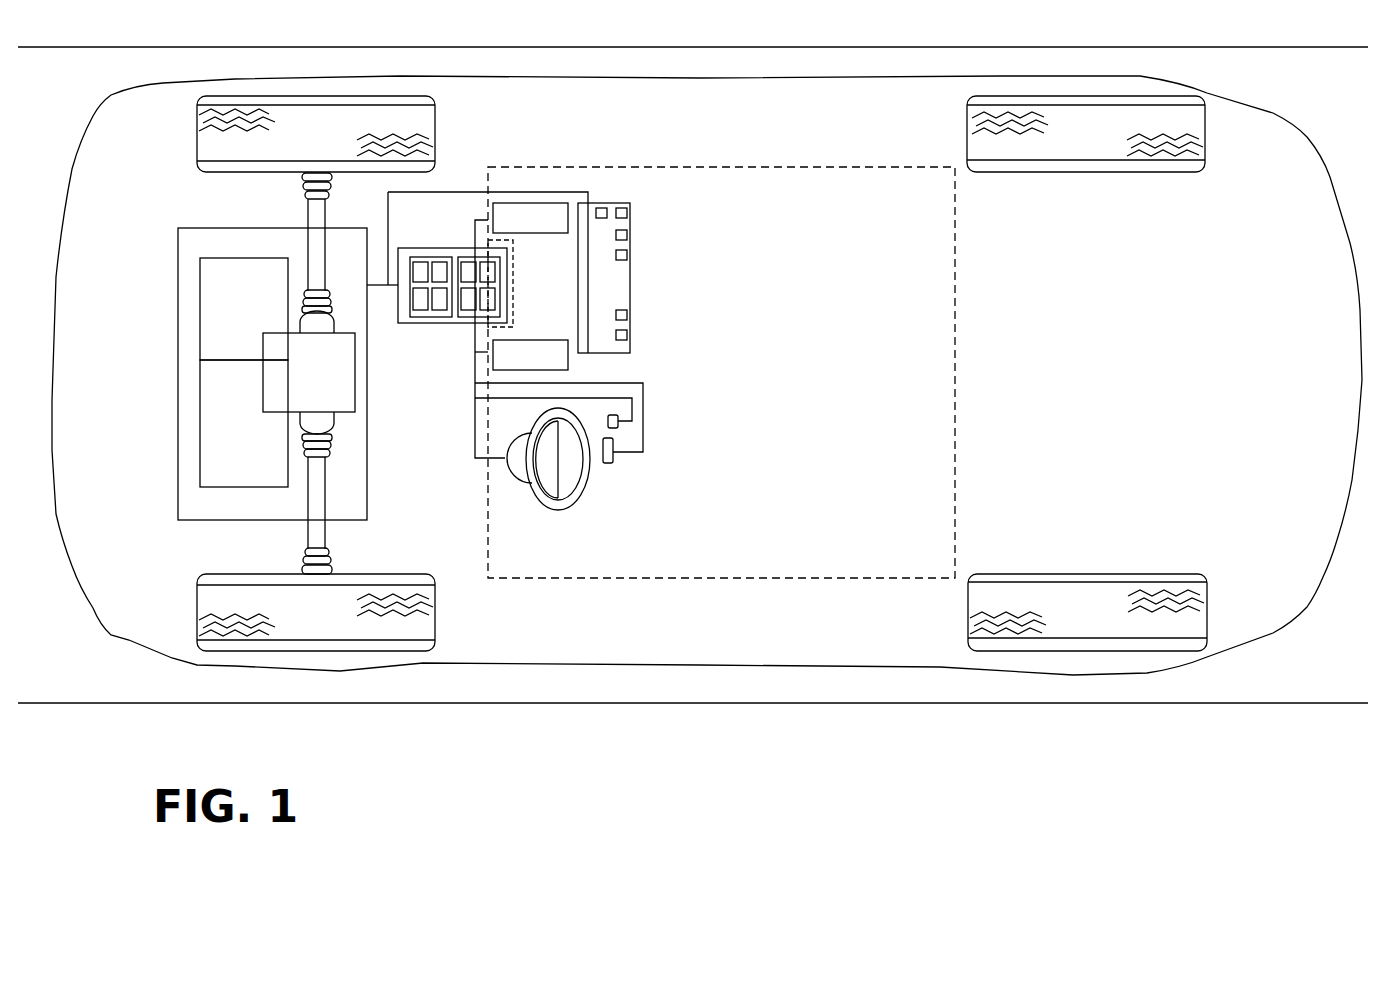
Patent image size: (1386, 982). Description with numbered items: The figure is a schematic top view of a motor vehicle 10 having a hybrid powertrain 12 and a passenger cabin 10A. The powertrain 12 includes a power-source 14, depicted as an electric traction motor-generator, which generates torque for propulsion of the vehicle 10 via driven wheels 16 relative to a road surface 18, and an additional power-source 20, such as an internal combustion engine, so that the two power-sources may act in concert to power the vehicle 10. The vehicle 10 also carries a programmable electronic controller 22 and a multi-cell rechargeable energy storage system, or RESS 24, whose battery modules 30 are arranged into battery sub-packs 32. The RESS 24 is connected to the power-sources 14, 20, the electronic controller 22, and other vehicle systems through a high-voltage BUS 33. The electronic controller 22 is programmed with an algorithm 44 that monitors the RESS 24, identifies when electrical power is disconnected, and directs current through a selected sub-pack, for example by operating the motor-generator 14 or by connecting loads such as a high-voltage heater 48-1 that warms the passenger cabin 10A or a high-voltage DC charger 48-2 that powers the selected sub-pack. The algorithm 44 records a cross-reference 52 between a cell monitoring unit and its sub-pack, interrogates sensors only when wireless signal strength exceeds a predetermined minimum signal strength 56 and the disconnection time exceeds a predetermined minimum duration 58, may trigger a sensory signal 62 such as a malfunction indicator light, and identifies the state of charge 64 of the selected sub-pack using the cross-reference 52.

The motor vehicle 10 is at (652, 670).
The passenger cabin 10A is at (958, 382).
The powertrain 12 is at (378, 482).
The power-source 14 is at (257, 299).
The driven wheels 16 is at (330, 143).
The road surface 18 is at (1344, 96).
The additional power-source 20 is at (257, 424).
The programmable electronic controller 22 is at (619, 293).
The multi-cell rechargeable energy storage system (RESS) 24 is at (410, 326).
The battery modules 30 is at (471, 313).
The battery sub-packs 32 is at (470, 257).
The high-voltage BUS 33 is at (374, 288).
The algorithm 44 is at (603, 208).
The high-voltage heater 48-1 is at (527, 234).
The high-voltage DC charger 48-2 is at (530, 340).
The cross-reference 52 is at (628, 213).
The predetermined minimum signal strength 56 is at (628, 235).
The predetermined minimum duration 58 is at (628, 255).
The sensory signal 62 is at (628, 315).
The state of charge (SOC) 64 is at (628, 335).